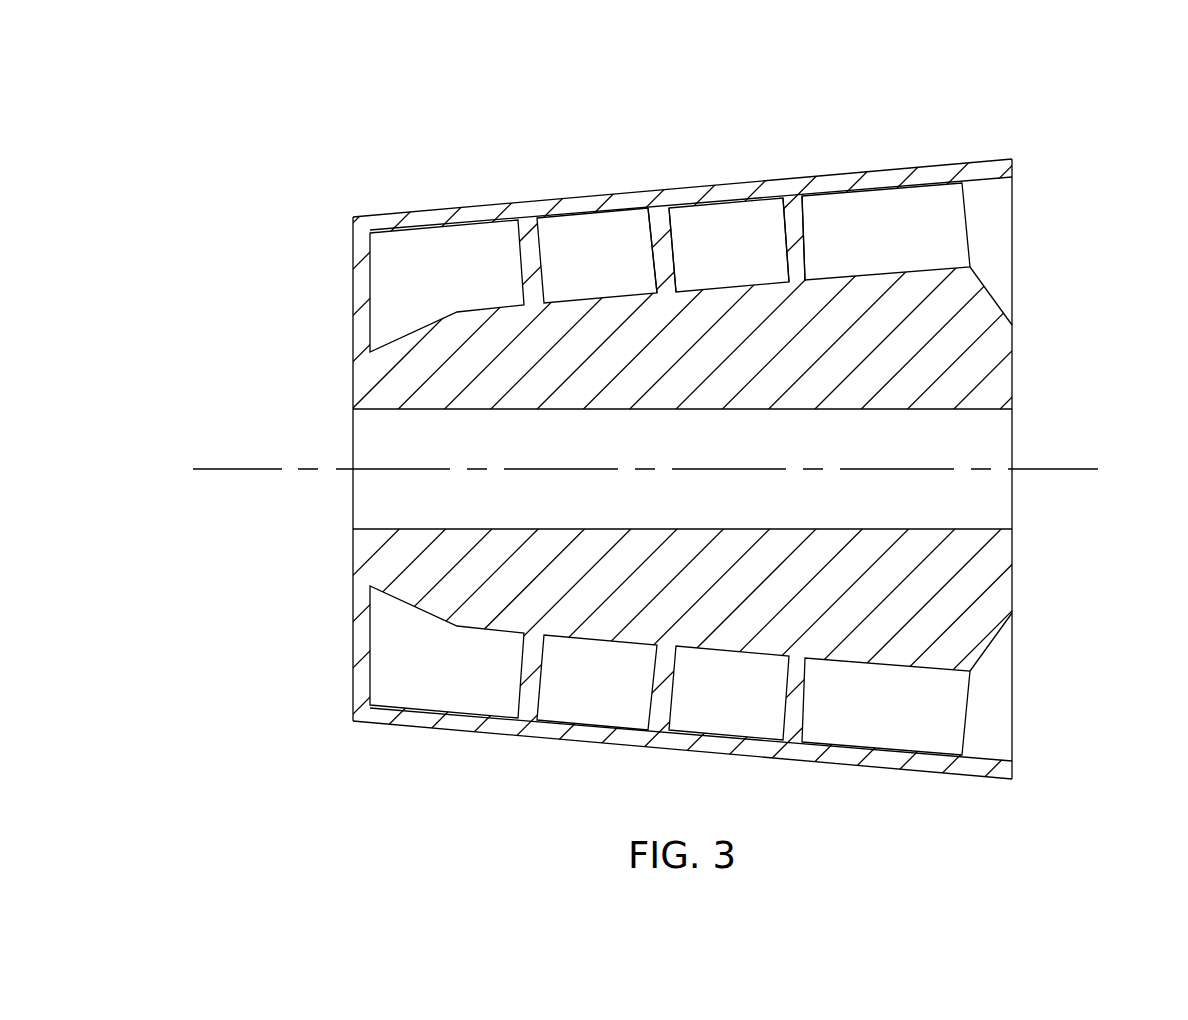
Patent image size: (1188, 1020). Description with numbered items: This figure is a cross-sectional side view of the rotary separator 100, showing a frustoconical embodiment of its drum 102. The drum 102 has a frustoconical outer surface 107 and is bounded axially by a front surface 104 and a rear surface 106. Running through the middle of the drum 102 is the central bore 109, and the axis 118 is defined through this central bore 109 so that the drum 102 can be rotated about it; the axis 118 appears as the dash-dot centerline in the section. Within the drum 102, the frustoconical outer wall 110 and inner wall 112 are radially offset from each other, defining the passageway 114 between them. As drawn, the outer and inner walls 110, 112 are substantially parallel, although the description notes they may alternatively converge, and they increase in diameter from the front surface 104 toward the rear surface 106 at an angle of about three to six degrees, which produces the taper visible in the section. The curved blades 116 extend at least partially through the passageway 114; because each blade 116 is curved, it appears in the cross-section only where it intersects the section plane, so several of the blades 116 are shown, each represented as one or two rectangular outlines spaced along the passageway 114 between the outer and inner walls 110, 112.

The rotary separator 100 is at (336, 119).
The drum 102 is at (1012, 159).
The front surface 104 is at (353, 553).
The rear surface 106 is at (1012, 583).
The outer surface 107 is at (868, 170).
The central bore 109 is at (1028, 428).
The outer wall 110 is at (590, 205).
The inner wall 112 is at (720, 282).
The passageway 114 is at (382, 264).
The curved blades 116 is at (665, 265).
The axis 118 is at (239, 468).